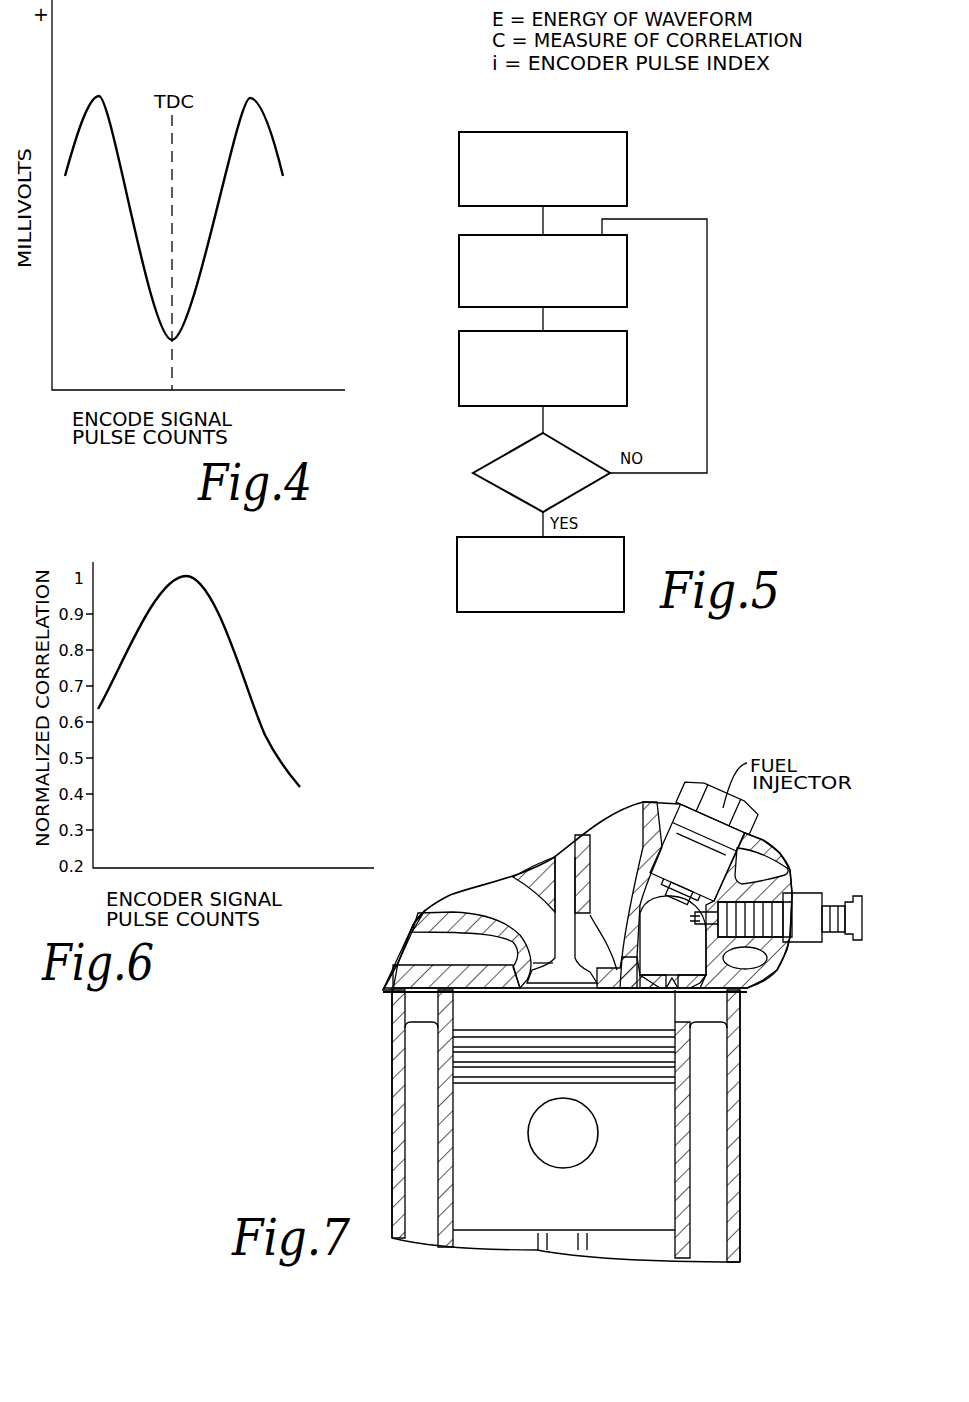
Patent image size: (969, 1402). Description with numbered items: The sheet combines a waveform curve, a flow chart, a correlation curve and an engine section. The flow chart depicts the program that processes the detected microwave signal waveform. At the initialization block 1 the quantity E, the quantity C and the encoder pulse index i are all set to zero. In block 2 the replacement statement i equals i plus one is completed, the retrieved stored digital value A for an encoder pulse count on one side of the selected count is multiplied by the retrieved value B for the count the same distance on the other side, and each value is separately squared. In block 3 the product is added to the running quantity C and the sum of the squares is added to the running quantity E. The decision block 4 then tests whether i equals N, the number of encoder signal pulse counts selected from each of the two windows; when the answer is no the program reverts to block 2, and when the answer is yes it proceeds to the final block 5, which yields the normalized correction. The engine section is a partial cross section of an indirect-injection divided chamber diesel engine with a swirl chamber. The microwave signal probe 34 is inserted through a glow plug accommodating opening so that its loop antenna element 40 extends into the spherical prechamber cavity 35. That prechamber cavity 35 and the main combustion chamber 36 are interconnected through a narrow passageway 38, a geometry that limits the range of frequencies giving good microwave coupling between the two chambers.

In FIG. 5, the initialization block 1 is at (620, 166).
In FIG. 5, the block 2 is at (620, 273).
In FIG. 5, the block 3 is at (622, 363).
In FIG. 5, the decision block 4 is at (575, 458).
In FIG. 5, the normalized correction block 5 is at (618, 560).
In FIG. 7, the microwave signal probe 34 is at (798, 925).
In FIG. 7, the spherical prechamber cavity 35 is at (652, 927).
In FIG. 7, the main combustion chamber 36 is at (617, 993).
In FIG. 7, the narrow passageway 38 is at (660, 993).
In FIG. 7, the loop antenna element 40 is at (645, 893).